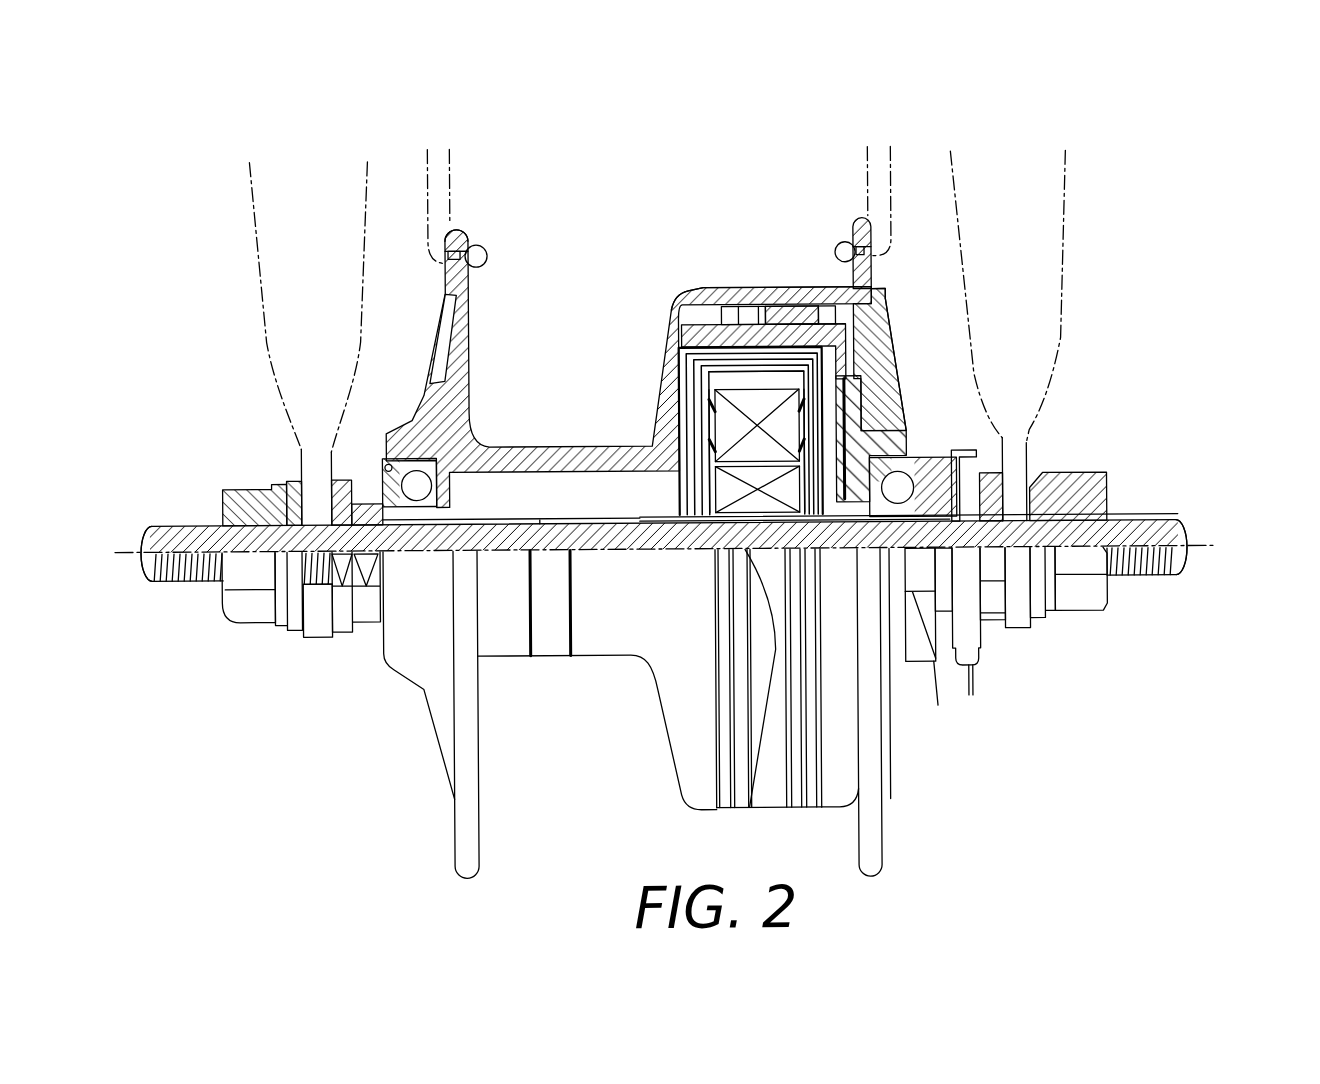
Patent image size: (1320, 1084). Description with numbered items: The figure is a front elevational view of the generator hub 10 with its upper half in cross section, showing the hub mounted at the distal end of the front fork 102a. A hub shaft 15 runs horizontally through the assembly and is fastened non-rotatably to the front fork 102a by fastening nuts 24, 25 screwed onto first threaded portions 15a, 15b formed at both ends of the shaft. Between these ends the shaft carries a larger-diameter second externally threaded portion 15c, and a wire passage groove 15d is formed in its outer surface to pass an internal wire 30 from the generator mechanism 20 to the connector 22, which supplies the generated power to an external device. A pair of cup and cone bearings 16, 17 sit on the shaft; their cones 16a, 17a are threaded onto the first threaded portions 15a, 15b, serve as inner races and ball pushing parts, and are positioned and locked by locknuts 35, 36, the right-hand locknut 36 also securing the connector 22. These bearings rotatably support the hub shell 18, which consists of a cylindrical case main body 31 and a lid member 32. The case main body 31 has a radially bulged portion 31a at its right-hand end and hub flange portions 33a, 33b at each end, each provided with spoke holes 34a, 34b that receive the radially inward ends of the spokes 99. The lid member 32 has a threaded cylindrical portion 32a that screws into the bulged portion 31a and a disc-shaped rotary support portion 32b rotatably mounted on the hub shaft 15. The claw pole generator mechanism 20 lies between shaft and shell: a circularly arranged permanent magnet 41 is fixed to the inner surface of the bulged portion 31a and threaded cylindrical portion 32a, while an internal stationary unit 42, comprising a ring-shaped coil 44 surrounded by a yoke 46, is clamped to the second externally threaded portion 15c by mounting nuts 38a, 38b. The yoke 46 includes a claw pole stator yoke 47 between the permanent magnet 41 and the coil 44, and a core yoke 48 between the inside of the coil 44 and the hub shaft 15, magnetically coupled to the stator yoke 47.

The generator hub 10 is at (603, 190).
The hub shaft 15 is at (1196, 520).
The first threaded portion 15a is at (175, 523).
The first threaded portion 15b is at (1150, 518).
The second externally threaded portion 15c is at (560, 518).
The wire passage groove 15d is at (672, 562).
The bearing 16 is at (428, 468).
The cone 16a is at (366, 502).
The bearing 17 is at (905, 478).
The cone 17a is at (960, 448).
The hub shell 18 is at (565, 426).
The generator mechanism 20 is at (745, 306).
The connector 22 is at (958, 622).
The fastening nut 24 is at (262, 605).
The fastening nut 25 is at (1073, 602).
The internal wire 30 is at (923, 665).
The case main body 31 is at (522, 446).
The bulged portion 31a is at (692, 300).
The lid member 32 is at (880, 362).
The threaded cylindrical portion 32a is at (885, 255).
The rotary support portion 32b is at (878, 367).
The hub flange portion 33a is at (470, 226).
The hub flange portion 33b is at (860, 220).
The spoke holes 34a is at (488, 255).
The spoke holes 34b is at (840, 250).
The locknut 35 is at (345, 607).
The locknut 36 is at (1000, 492).
The mounting nut 38a is at (660, 517).
The mounting nut 38b is at (855, 460).
The permanent magnet 41 is at (706, 325).
The internal stationary unit 42 is at (795, 339).
The ring-shaped coil 44 is at (722, 410).
The yoke 46 is at (690, 355).
The stator yoke 47 is at (740, 303).
The core yoke 48 is at (848, 410).
The spokes 99 is at (455, 172).
The front fork 102a is at (255, 242).